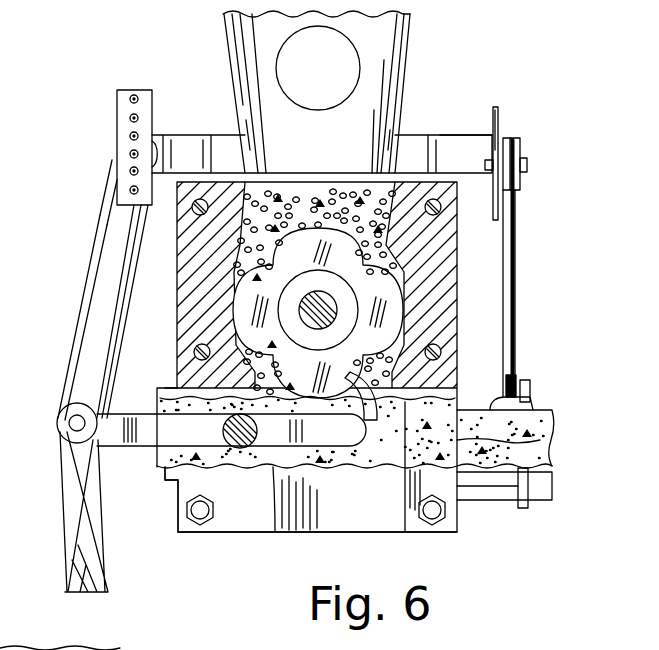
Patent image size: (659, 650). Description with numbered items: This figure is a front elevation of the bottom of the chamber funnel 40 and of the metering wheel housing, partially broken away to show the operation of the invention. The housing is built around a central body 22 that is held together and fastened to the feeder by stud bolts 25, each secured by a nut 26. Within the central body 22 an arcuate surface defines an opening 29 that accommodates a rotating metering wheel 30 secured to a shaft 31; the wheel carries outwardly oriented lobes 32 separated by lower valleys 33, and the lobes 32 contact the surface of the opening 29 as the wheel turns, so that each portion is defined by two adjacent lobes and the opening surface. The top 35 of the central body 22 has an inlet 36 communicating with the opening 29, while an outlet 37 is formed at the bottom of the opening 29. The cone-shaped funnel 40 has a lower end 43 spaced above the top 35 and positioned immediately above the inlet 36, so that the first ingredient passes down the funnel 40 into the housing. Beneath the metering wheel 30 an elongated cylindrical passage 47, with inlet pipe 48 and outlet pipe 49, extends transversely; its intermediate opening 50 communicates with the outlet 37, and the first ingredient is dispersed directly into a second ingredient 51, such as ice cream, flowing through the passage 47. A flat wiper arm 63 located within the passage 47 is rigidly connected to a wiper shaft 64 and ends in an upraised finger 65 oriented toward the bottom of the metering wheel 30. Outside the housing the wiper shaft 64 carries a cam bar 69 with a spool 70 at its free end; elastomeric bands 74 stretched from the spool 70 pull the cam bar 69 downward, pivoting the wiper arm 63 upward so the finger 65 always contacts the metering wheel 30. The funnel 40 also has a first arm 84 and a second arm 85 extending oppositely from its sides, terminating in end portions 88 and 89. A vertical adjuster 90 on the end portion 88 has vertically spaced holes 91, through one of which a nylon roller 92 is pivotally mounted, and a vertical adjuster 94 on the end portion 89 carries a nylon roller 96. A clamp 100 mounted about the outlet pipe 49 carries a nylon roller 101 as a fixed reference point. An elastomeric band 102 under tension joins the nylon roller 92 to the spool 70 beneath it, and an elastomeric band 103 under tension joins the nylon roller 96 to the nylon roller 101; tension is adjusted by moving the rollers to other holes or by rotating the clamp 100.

The central body 22 is at (458, 308).
The stud bolts 25 is at (450, 212).
The nut 26 is at (443, 533).
The opening 29 is at (257, 263).
The metering wheel 30 is at (400, 292).
The shaft 31 is at (333, 322).
The lobes 32 is at (315, 222).
The valleys 33 is at (348, 230).
The top 35 is at (438, 185).
The inlet 36 is at (403, 123).
The outlet 37 is at (157, 393).
The chamber funnel 40 is at (412, 58).
The lower end 43 is at (278, 173).
The passage 47 is at (540, 440).
The inlet pipe 48 is at (160, 468).
The outlet pipe 49 is at (500, 502).
The intermediate opening 50 is at (380, 392).
The second ingredient 51 is at (167, 388).
The wiper arm 63 is at (275, 480).
The wiper shaft 64 is at (238, 450).
The finger 65 is at (406, 532).
The cam bar 69 is at (128, 447).
The spool 70 is at (57, 432).
The elastomeric bands 74 is at (72, 545).
The first arm 84 is at (449, 133).
The second arm 85 is at (177, 135).
The end portion 88 is at (117, 132).
The end portion 89 is at (520, 140).
The vertical adjuster 90 is at (118, 97).
The holes 91 is at (130, 101).
The nylon roller 92 is at (112, 148).
The vertical adjuster 94 is at (500, 117).
The nylon roller 96 is at (520, 182).
The clamp 100 is at (552, 480).
The nylon roller 101 is at (495, 425).
The elastomeric band 102 is at (92, 240).
The elastomeric band 103 is at (515, 217).